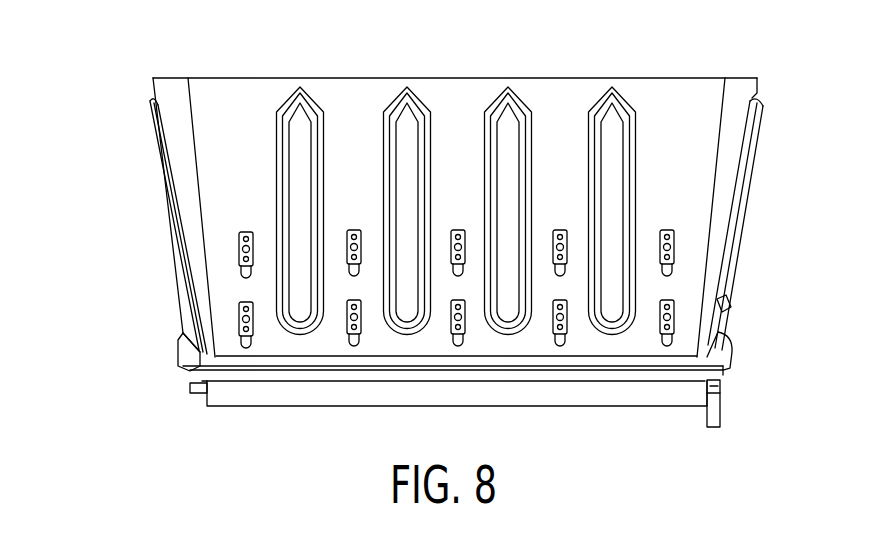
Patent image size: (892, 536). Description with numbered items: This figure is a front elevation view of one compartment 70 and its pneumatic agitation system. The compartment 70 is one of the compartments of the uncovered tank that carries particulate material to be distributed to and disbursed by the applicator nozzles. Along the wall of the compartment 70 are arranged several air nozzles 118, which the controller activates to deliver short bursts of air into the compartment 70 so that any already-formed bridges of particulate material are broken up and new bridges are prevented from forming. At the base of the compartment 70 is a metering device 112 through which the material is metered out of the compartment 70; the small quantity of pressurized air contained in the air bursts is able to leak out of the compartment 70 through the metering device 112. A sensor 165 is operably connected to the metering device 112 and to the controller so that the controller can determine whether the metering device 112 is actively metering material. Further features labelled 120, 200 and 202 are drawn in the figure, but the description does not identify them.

The compartment 70 is at (150, 155).
The metering device 112 is at (187, 398).
The air nozzle 118 is at (262, 237).
The connector tabs 120 is at (250, 279).
The sensor 165 is at (712, 427).
The lower connector 200 is at (232, 318).
The upper connector 202 is at (232, 243).